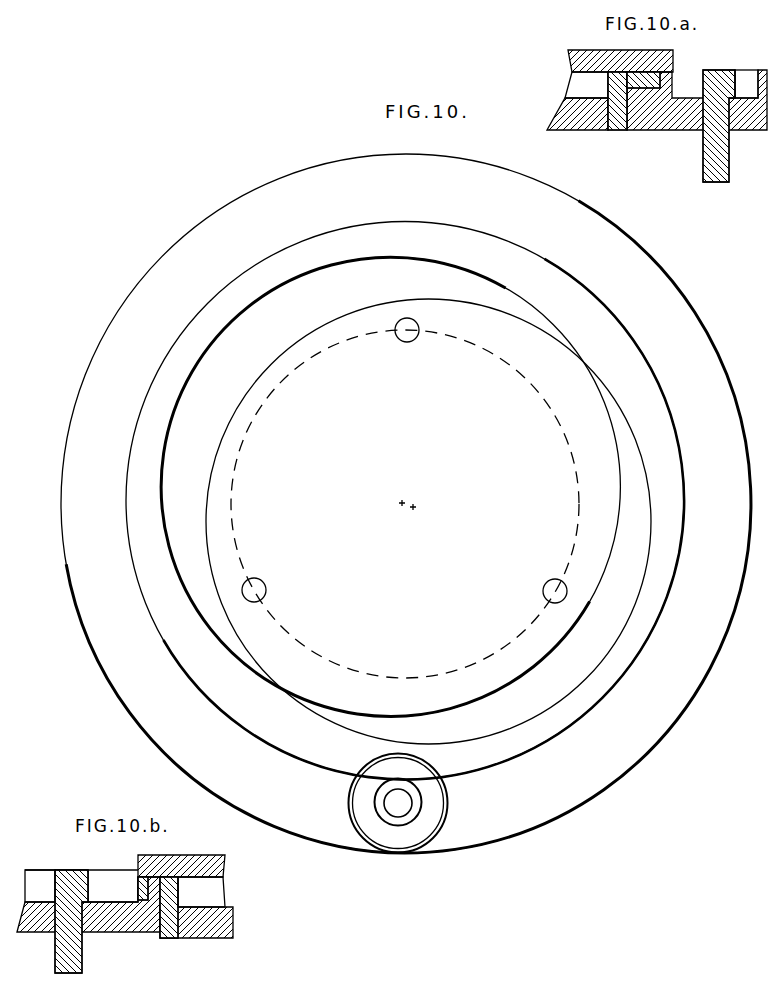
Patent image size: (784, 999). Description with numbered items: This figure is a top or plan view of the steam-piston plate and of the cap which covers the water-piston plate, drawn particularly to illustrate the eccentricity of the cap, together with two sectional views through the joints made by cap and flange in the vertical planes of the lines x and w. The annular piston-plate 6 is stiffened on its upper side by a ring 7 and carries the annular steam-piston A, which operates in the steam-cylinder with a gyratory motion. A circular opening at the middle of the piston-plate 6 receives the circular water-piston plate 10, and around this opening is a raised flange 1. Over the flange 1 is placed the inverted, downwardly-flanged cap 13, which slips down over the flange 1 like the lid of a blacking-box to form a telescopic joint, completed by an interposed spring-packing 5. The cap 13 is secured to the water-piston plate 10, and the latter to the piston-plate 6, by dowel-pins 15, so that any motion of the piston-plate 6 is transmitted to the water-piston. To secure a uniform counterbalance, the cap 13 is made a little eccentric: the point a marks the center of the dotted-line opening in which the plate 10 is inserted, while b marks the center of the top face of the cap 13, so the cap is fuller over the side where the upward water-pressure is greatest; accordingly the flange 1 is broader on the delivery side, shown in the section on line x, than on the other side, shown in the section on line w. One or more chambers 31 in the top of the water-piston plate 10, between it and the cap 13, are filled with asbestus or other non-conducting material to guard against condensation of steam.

In FIG. 10A, the raised flange 1 is at (660, 74).
In FIG. 10B, the raised flange 1 is at (140, 877).
In FIG. 10A, the spring-packing 5 is at (586, 85).
In FIG. 10B, the spring-packing 5 is at (138, 888).
In FIG. 10, the piston-plate 6 is at (406, 503).
In FIG. 10A, the piston-plate 6 is at (746, 85).
In FIG. 10B, the piston-plate 6 is at (40, 886).
In FIG. 10, the ring 7 is at (222, 666).
In FIG. 10A, the ring 7 is at (720, 70).
In FIG. 10B, the ring 7 is at (71, 911).
In FIG. 10A, the water-piston plate 10 is at (586, 130).
In FIG. 10B, the water-piston plate 10 is at (182, 932).
In FIG. 10, the cap 13 is at (405, 504).
In FIG. 10A, the cap 13 is at (620, 50).
In FIG. 10B, the cap 13 is at (181, 856).
In FIG. 10, the dowel-pins 15 is at (409, 318).
In FIG. 10A, the chambers 31 is at (572, 86).
In FIG. 10B, the chambers 31 is at (192, 907).
In FIG. 10A, the steam-piston A is at (729, 153).
In FIG. 10B, the steam-piston A is at (82, 950).
In FIG. 10, the center of the opening a is at (388, 497).
In FIG. 10, the center of the top face of the cap b is at (423, 511).
In FIG. 10, the line w is at (205, 500).
In FIG. 10, the line x is at (555, 538).